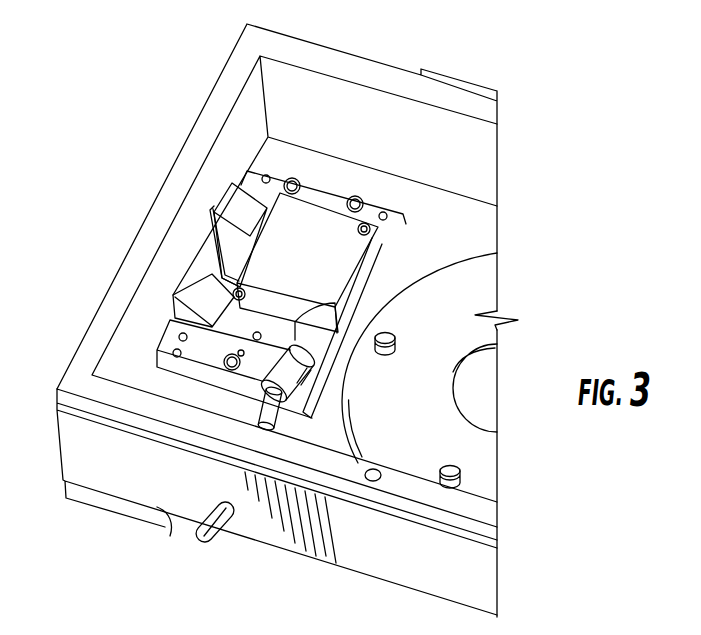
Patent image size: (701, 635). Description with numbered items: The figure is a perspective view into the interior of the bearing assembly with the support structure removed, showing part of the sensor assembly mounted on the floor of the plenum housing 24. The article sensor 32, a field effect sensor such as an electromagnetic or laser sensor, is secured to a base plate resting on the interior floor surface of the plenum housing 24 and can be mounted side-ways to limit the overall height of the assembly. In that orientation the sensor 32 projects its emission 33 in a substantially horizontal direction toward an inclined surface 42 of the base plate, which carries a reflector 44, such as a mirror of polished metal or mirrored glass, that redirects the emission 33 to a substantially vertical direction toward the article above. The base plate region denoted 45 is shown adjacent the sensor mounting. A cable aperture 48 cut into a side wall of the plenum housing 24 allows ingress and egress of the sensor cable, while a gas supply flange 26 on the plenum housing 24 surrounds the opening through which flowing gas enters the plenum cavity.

The plenum housing 24 is at (231, 134).
The gas supply flange 26 is at (466, 293).
The article sensor 32 is at (317, 237).
The emission 33 is at (213, 257).
The inclined surface 42 is at (197, 297).
The reflector 44 is at (233, 237).
The base plate 45 is at (233, 343).
The cable aperture 48 is at (212, 503).